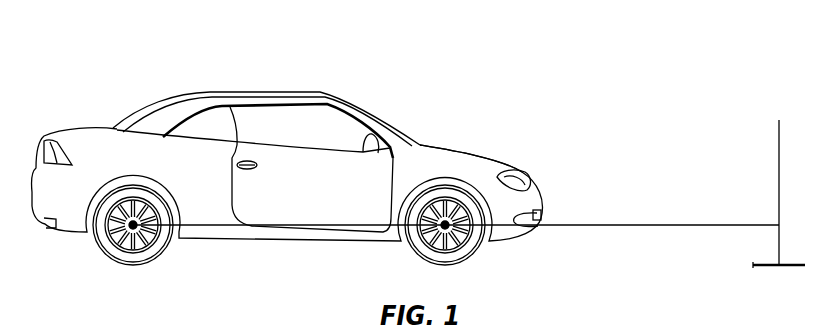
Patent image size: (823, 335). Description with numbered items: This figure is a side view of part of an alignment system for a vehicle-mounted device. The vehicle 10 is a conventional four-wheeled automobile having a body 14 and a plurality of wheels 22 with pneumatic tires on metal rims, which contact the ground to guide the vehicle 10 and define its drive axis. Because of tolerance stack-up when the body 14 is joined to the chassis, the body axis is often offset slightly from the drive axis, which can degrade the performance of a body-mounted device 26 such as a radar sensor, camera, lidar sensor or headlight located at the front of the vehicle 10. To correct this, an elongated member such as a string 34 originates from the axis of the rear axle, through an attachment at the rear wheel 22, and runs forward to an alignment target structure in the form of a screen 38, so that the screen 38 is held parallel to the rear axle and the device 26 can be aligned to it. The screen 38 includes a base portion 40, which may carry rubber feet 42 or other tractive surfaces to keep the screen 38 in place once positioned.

The vehicle 10 is at (313, 58).
The body 14 is at (430, 161).
The wheels 22 is at (116, 250).
The device 26 is at (543, 214).
The string 34 is at (618, 223).
The screen 38 is at (778, 178).
The base portion 40 is at (765, 265).
The rubber feet 42 is at (757, 267).